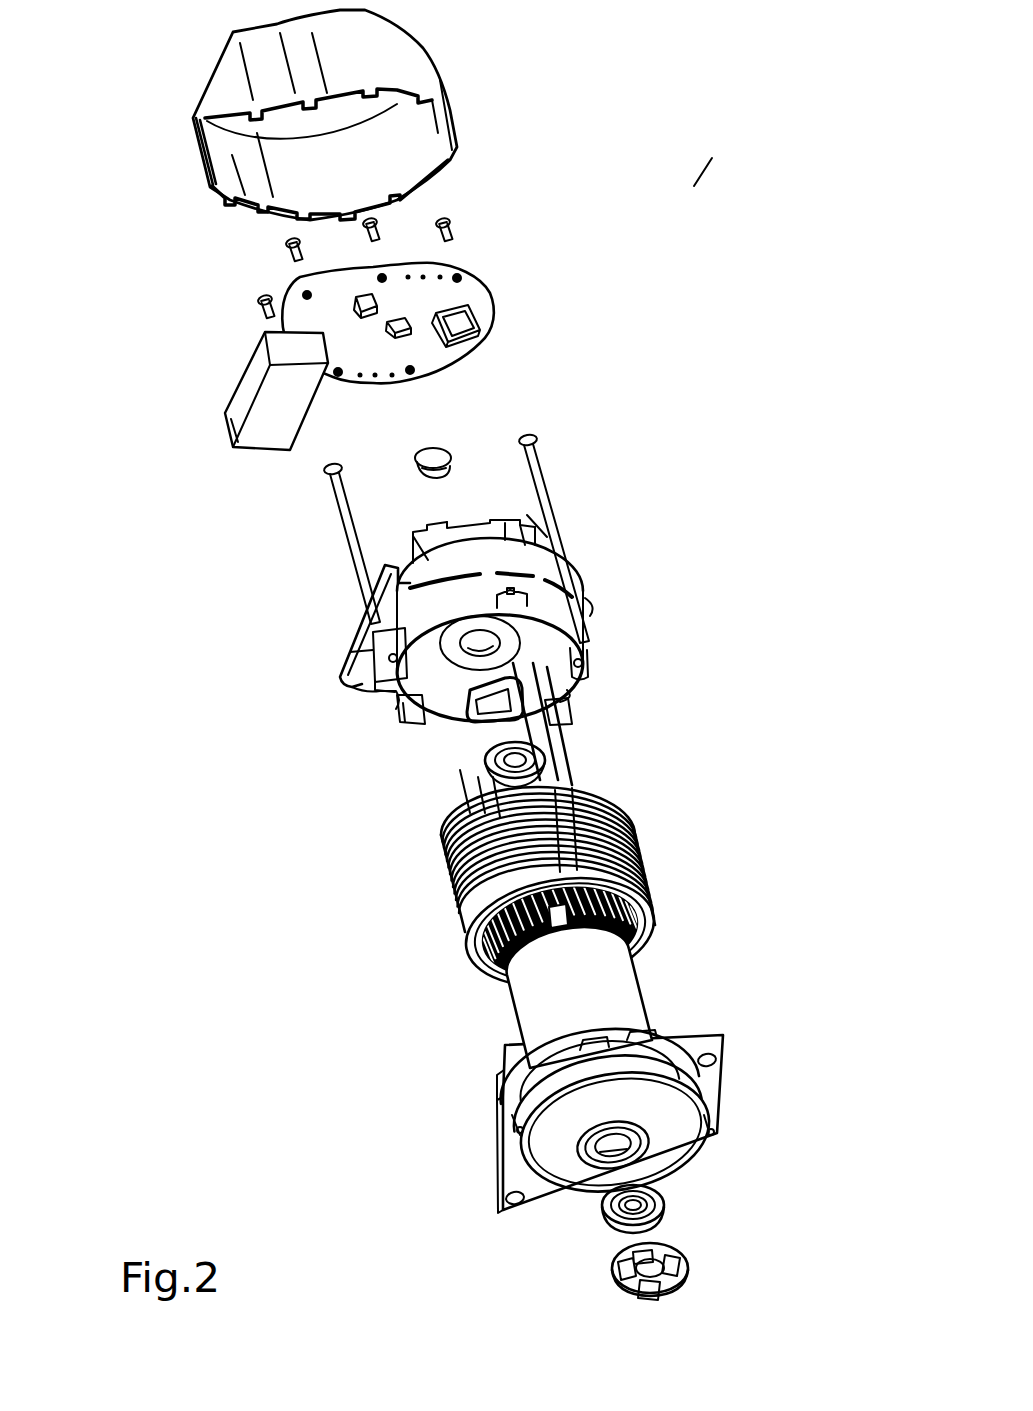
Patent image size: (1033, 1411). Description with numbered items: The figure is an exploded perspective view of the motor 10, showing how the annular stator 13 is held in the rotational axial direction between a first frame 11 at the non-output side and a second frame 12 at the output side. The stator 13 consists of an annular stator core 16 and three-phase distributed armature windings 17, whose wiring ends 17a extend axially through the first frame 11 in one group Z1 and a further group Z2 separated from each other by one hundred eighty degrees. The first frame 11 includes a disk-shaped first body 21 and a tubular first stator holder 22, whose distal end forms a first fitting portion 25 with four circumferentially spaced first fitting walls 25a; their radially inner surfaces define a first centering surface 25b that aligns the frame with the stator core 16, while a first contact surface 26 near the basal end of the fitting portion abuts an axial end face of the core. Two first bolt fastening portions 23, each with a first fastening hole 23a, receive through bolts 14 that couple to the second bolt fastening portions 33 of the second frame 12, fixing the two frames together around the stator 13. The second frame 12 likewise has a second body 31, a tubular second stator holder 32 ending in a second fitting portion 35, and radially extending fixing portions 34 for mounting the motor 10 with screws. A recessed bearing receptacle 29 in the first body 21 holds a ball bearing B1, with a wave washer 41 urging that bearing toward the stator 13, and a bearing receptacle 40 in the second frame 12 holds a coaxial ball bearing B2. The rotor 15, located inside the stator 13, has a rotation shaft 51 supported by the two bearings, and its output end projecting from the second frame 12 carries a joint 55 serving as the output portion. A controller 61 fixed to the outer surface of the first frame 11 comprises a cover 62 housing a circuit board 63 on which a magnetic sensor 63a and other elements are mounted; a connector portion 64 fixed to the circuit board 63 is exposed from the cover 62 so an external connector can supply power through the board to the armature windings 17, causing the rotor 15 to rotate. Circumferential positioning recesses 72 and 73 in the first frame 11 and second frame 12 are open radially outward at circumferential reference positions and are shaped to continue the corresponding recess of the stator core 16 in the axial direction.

The motor 10 is at (694, 186).
The first frame 11 is at (360, 610).
The second frame 12 is at (606, 1124).
The stator 13 is at (557, 893).
The through bolts 14 is at (331, 512).
The rotor 15 is at (606, 986).
The stator core 16 is at (637, 845).
The armature windings 17 is at (487, 960).
The wiring ends 17a is at (473, 793).
The first body 21 is at (565, 570).
The first stator holder 22 is at (367, 615).
The first bolt fastening portions 23 is at (363, 637).
The first fastening hole 23a is at (388, 657).
The first fitting portion 25 is at (420, 735).
The first fitting walls 25a is at (422, 632).
The first centering surface 25b is at (417, 723).
The first contact surface 26 is at (380, 690).
The bearing receptacle 29 is at (478, 656).
The second body 31 is at (670, 1157).
The second stator holder 32 is at (518, 1086).
The second bolt fastening portions 33 is at (500, 1110).
The fixing portions 34 is at (720, 1057).
The second fitting portion 35 is at (527, 1058).
The bearing receptacle 40 is at (604, 1158).
The wave washer 41 is at (467, 718).
The rotation shaft 51 is at (643, 930).
The joint 55 is at (688, 1268).
The controller 61 is at (452, 82).
The cover 62 is at (200, 153).
The circuit board 63 is at (412, 344).
The magnetic sensor 63a is at (395, 340).
The connector portion 64 is at (260, 452).
The circumferential positioning recess 72 is at (560, 545).
The circumferential positioning recess 73 is at (621, 1036).
The ball bearing B1 is at (487, 763).
The ball bearing B2 is at (607, 1210).
The group of wiring ends Z1 is at (590, 753).
The further group of wiring ends Z2 is at (448, 783).